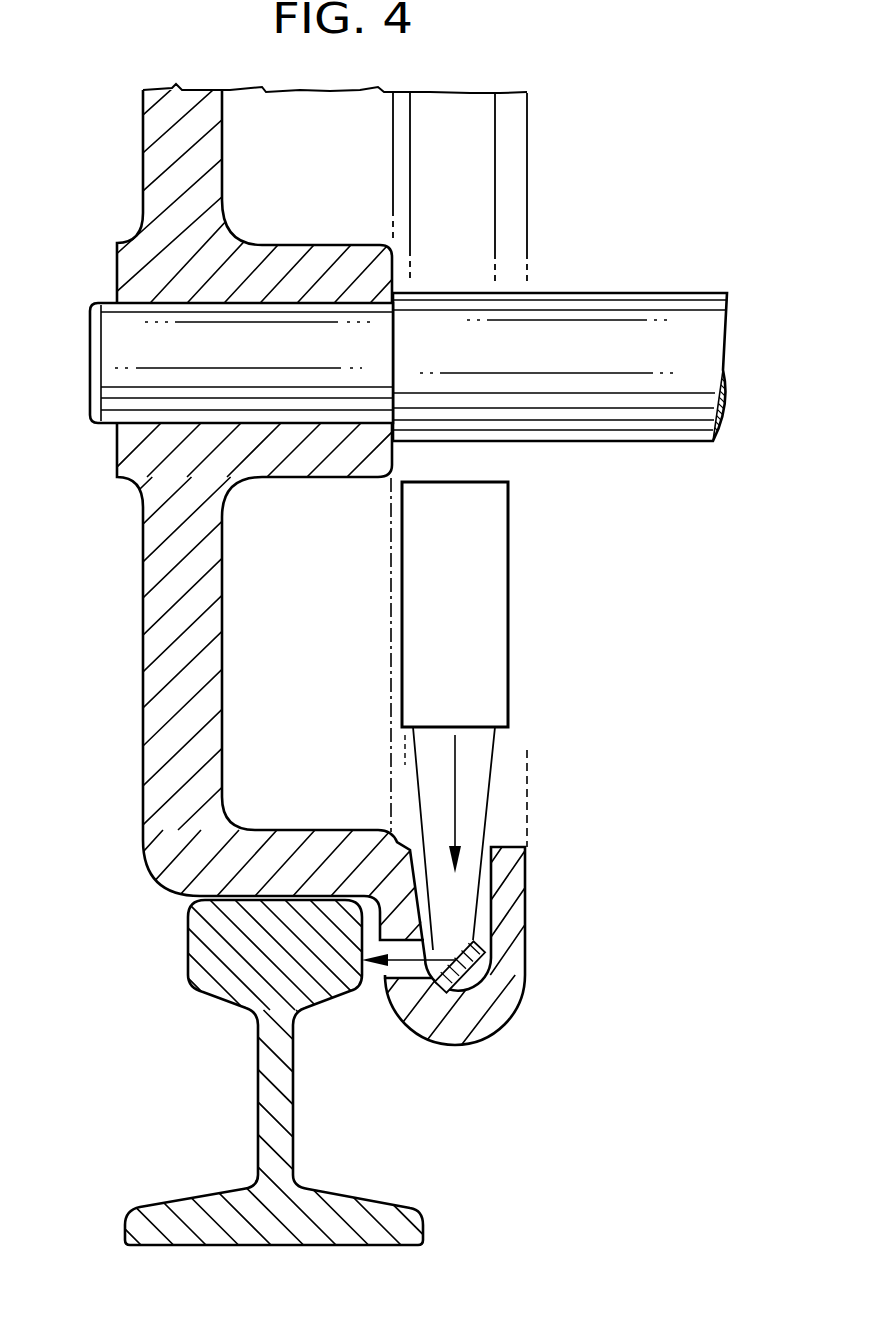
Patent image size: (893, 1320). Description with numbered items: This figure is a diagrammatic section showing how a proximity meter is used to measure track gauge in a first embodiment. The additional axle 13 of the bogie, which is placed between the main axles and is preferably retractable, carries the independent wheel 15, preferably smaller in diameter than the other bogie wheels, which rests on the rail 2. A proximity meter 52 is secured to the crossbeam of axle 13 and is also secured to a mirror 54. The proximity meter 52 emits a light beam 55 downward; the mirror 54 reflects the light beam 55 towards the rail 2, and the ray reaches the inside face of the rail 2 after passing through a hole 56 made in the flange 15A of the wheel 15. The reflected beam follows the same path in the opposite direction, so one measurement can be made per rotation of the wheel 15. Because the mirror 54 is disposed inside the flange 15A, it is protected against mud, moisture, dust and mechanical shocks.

The rail 2 is at (217, 948).
The additional axle 13 is at (610, 320).
The wheel 15 is at (188, 670).
The flange of the wheel 15A is at (460, 1022).
The proximity meter 52 is at (478, 566).
The mirror 54 is at (492, 972).
The light beam 55 is at (457, 805).
The hole 56 is at (402, 977).